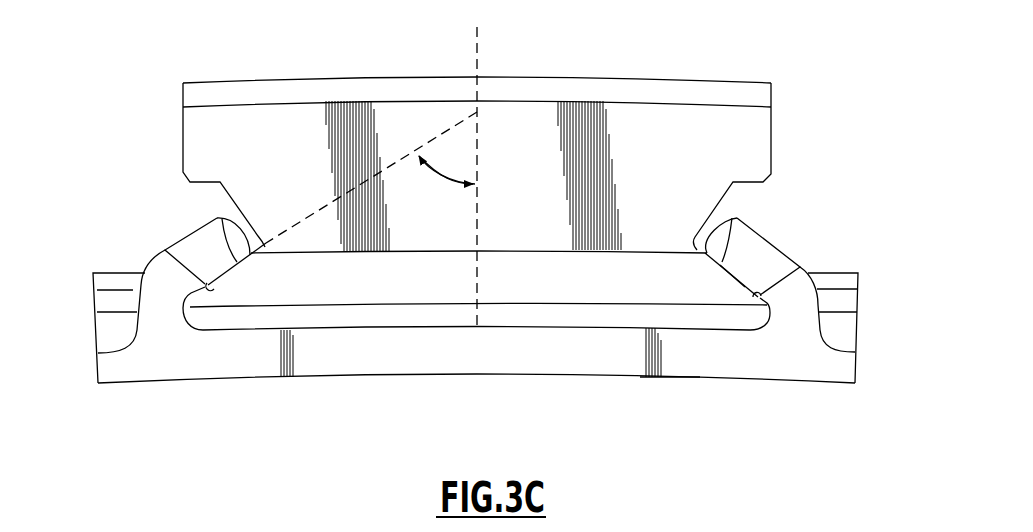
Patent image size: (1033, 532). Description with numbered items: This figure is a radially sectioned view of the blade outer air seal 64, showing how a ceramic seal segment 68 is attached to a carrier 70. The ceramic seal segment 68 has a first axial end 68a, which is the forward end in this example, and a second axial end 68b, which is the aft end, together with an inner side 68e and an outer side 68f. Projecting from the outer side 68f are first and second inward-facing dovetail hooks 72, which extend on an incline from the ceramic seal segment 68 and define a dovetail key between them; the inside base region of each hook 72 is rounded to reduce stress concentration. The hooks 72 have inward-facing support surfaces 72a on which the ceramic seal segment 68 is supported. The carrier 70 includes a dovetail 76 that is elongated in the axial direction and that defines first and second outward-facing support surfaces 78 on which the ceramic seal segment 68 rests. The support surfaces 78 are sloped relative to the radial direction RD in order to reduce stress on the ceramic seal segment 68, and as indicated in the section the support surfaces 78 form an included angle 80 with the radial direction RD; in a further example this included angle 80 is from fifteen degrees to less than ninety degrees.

The seal 64 is at (818, 118).
The carrier 70 is at (183, 83).
The inward-facing dovetail hooks 72 is at (179, 236).
The inward-facing support surfaces 72a is at (166, 252).
The dovetail 76 is at (737, 282).
The outward-facing support surfaces 78 is at (218, 217).
The included angle 80 is at (432, 176).
The radial direction RD is at (477, 57).
The ceramic seal segment 68 is at (273, 377).
The first axial end 68a is at (98, 376).
The second axial end 68b is at (857, 368).
The inner side 68e is at (675, 377).
The outer side 68f is at (362, 313).